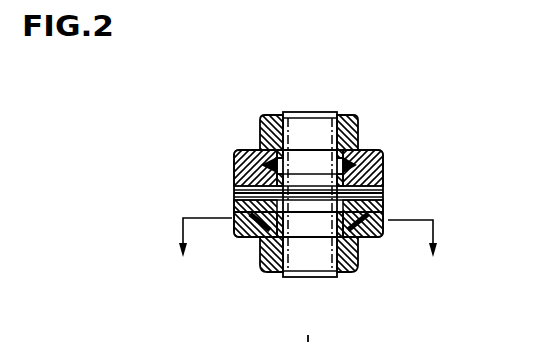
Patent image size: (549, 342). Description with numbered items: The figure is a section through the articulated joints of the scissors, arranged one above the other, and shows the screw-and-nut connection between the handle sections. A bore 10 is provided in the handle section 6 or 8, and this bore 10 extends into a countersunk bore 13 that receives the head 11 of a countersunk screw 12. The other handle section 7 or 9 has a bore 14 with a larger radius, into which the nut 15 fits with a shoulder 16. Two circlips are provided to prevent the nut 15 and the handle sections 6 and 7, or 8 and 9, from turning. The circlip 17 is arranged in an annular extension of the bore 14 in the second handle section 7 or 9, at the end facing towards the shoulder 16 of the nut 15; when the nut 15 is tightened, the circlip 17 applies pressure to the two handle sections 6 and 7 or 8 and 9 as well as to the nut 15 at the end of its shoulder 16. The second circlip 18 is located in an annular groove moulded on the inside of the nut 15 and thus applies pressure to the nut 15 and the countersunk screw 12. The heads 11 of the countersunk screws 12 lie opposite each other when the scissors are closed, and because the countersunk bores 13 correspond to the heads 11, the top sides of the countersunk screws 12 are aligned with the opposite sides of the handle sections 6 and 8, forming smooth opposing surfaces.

The handle section 6 is at (345, 186).
The handle section 7 is at (237, 158).
The handle section 8 is at (235, 207).
The handle section 9 is at (242, 237).
The bore 10 is at (345, 176).
The head 11 is at (305, 184).
The countersunk screw 12 is at (318, 117).
The countersunk bore 13 is at (236, 170).
The bore 14 is at (258, 150).
The nut 15 is at (358, 135).
The shoulder 16 is at (382, 153).
The circlip 17 is at (378, 243).
The circlip 18 is at (350, 270).